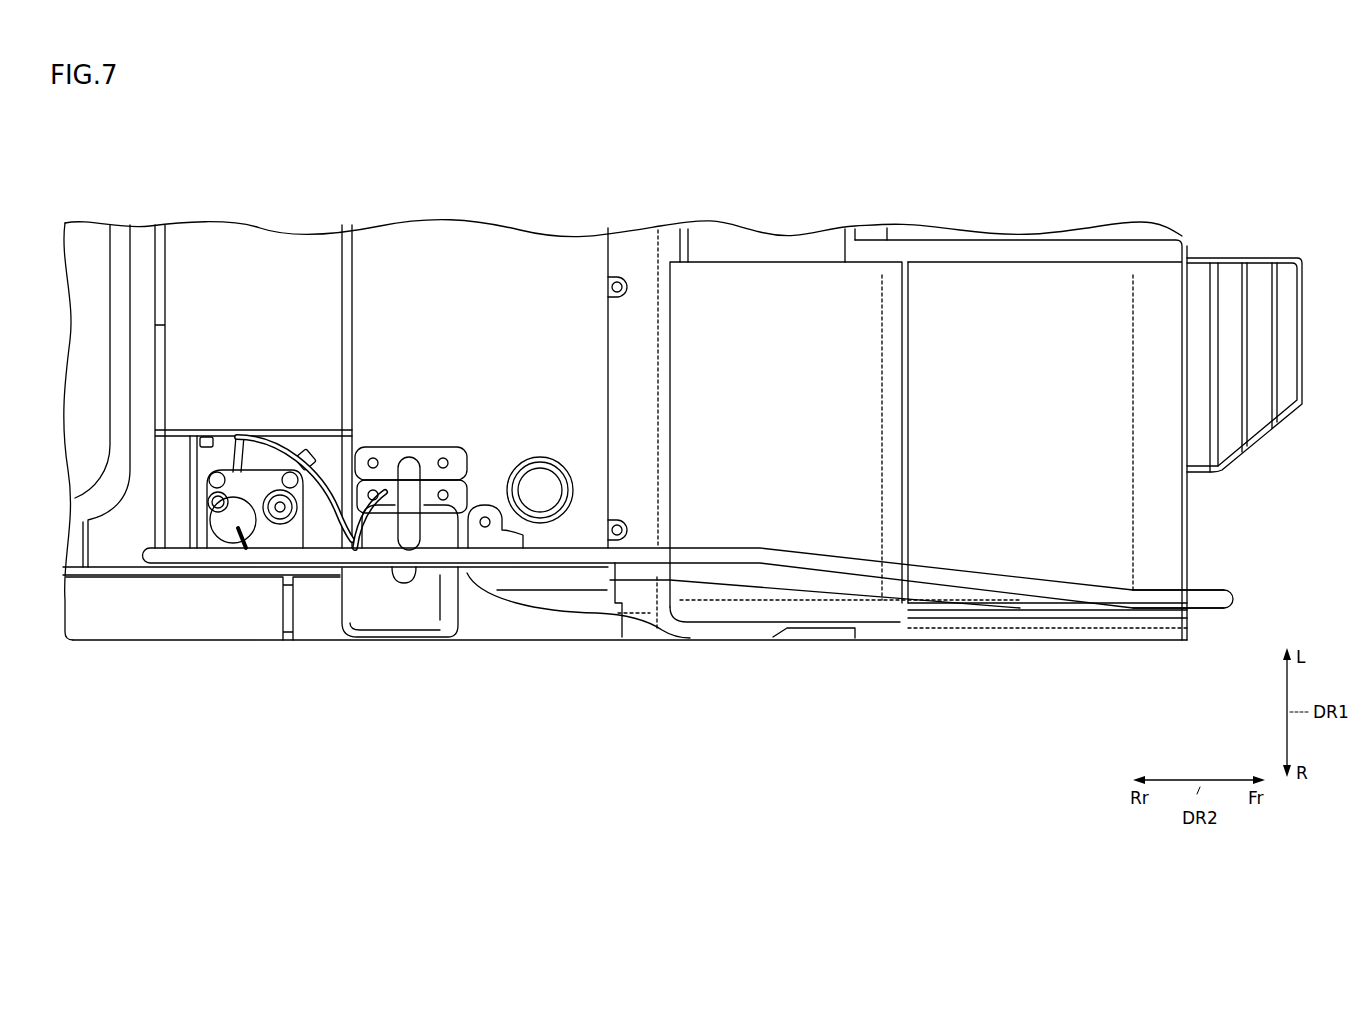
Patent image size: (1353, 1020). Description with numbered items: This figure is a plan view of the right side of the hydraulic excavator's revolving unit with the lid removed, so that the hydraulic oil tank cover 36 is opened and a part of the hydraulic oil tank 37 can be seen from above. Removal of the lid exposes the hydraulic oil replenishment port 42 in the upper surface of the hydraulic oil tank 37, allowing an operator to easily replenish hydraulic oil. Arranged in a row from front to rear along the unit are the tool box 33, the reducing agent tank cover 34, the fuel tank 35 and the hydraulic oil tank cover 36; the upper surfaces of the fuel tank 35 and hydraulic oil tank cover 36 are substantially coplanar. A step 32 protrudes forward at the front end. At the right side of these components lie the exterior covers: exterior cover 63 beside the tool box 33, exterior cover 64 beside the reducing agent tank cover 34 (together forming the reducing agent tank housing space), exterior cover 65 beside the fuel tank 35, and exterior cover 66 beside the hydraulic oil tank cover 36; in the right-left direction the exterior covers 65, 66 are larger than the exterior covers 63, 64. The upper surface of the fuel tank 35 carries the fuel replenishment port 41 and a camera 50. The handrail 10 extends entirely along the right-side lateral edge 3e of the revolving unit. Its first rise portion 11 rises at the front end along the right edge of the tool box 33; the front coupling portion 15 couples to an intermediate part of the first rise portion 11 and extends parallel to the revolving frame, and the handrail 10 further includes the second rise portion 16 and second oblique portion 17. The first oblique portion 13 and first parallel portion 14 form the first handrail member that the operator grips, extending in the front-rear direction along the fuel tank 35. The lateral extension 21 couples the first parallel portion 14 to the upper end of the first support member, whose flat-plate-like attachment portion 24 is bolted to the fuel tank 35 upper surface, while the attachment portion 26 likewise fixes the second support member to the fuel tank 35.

The hydraulic oil tank cover 36 is at (252, 300).
The fuel tank 35 is at (470, 303).
The reducing agent tank cover 34 is at (758, 303).
The tool box 33 is at (1047, 303).
The step 32 is at (1305, 333).
The exterior cover 66 is at (130, 612).
The hydraulic oil replenishment port 42 is at (272, 520).
The hydraulic oil tank 37 is at (315, 513).
The attachment portion 24 is at (338, 532).
The lateral extension 21 is at (395, 492).
The camera 50 is at (410, 603).
The exterior cover 65 is at (462, 623).
The first parallel portion 14 is at (503, 555).
The attachment portion 26 is at (485, 527).
The lateral edge 3e is at (535, 640).
The handrail 10 is at (565, 566).
The fuel replenishment port 41 is at (545, 492).
The exterior cover 64 is at (767, 633).
The second oblique portion 17 is at (812, 582).
The first oblique portion 13 is at (922, 573).
The second rise portion 16 is at (970, 597).
The front coupling portion 15 is at (1033, 600).
The exterior cover 63 is at (1092, 633).
The first rise portion 11 is at (1163, 600).